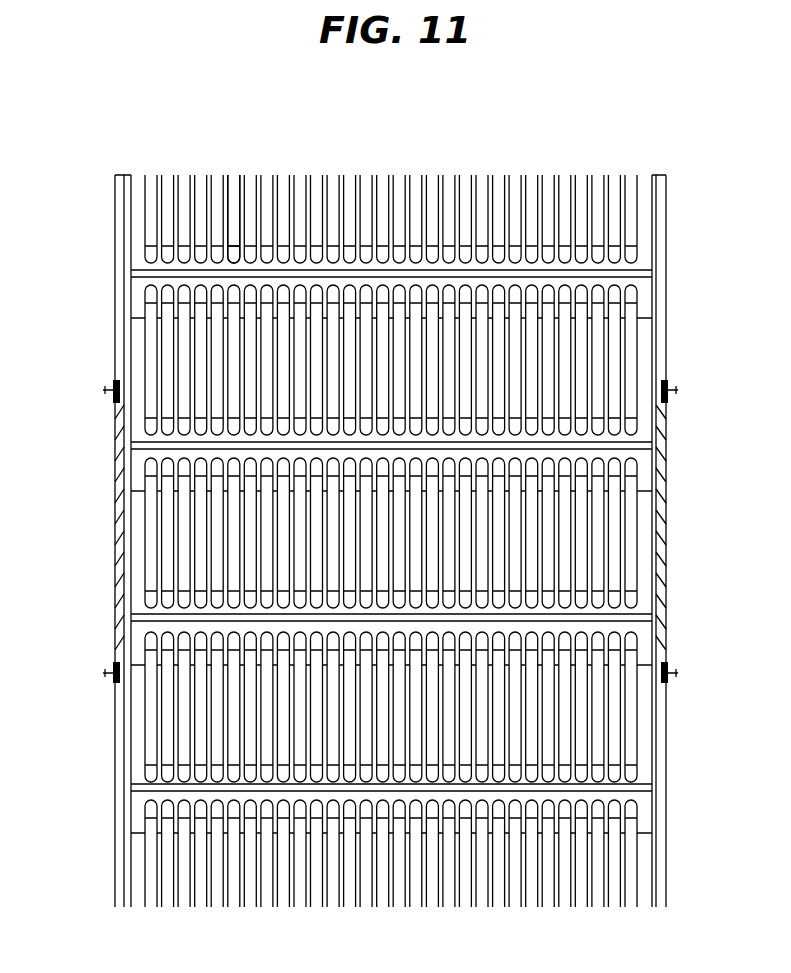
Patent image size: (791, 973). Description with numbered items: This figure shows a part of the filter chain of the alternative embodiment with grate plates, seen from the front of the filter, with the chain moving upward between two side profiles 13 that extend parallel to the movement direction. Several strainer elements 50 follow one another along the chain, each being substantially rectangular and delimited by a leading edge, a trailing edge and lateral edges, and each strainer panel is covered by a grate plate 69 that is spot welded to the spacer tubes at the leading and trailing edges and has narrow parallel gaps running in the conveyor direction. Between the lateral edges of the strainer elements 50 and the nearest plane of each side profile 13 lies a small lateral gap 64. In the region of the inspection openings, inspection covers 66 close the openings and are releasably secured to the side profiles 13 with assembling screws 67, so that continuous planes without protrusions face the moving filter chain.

The side profile 13 is at (118, 221).
The lateral gap 64 is at (126, 166).
The grate plate 69 is at (238, 187).
The strainer element 50 is at (287, 158).
The inspection cover 66 is at (112, 572).
The assembling screw 67 is at (104, 389).